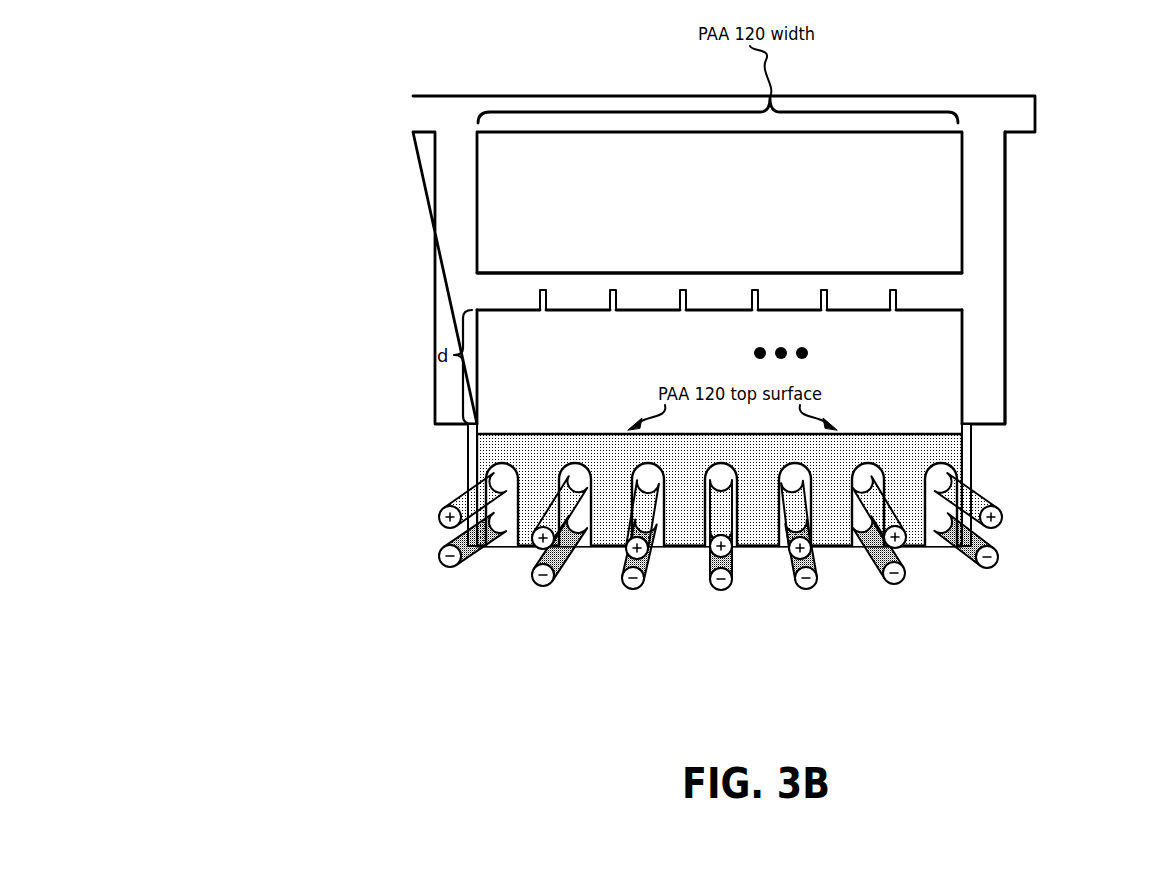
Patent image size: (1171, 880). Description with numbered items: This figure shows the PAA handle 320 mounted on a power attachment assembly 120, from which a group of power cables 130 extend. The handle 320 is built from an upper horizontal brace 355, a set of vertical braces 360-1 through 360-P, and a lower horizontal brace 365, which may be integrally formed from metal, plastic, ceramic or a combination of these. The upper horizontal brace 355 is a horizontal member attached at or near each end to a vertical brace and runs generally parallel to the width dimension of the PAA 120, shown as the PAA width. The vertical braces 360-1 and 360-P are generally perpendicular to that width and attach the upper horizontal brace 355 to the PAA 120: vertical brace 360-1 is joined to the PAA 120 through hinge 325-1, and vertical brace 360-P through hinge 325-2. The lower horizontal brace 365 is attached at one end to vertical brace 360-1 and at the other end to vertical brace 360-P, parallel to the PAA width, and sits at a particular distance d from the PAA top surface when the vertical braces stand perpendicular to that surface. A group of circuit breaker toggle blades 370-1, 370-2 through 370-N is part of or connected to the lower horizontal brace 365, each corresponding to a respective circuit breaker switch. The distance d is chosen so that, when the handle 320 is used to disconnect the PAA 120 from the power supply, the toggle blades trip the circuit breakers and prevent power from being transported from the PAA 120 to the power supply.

The PAA handle 320 is at (315, 477).
The upper horizontal brace 355 is at (693, 133).
The vertical brace 360-1 is at (477, 208).
The vertical brace 360-P is at (1005, 213).
The lower horizontal brace 365 is at (697, 273).
The circuit breaker toggle blade 370-1 is at (524, 293).
The circuit breaker toggle blade 370-2 is at (642, 293).
The circuit breaker toggle blade 370-N is at (922, 293).
The hinge 325-1 is at (468, 455).
The hinge 325-2 is at (972, 455).
The power attachment assembly 120 is at (752, 522).
The power cable 130 is at (1000, 520).